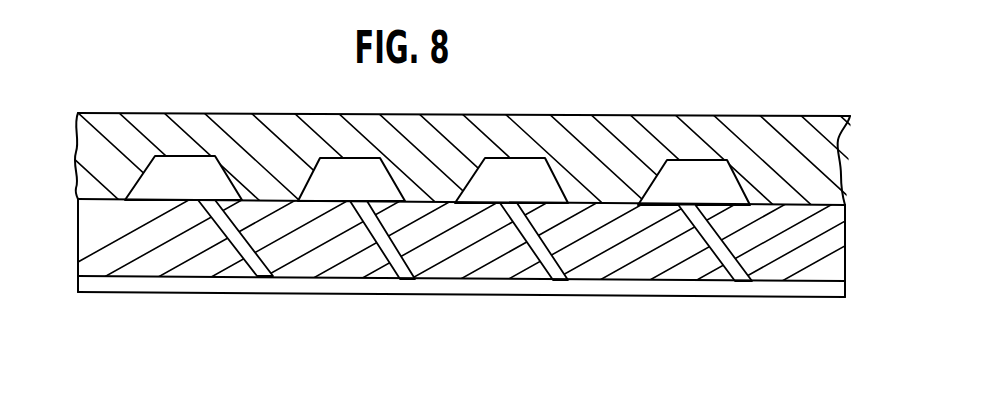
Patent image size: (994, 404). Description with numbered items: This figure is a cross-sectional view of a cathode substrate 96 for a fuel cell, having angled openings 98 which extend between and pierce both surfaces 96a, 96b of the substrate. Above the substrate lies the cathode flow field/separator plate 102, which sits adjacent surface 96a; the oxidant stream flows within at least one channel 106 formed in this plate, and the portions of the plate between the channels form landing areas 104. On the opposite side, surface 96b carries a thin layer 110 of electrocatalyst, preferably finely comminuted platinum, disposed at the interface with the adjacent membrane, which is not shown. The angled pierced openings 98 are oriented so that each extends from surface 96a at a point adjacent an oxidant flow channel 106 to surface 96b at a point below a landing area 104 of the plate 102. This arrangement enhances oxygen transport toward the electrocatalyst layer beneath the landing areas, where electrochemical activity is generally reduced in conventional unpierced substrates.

The cathode flow field/separator plate 102 is at (92, 148).
The landing areas 104 is at (595, 185).
The channel 106 is at (179, 168).
The cathode substrate 96 is at (830, 238).
The surface 96a is at (796, 202).
The surface 96b is at (830, 280).
The angled openings 98 is at (390, 244).
The thin layer of electrocatalyst 110 is at (87, 283).